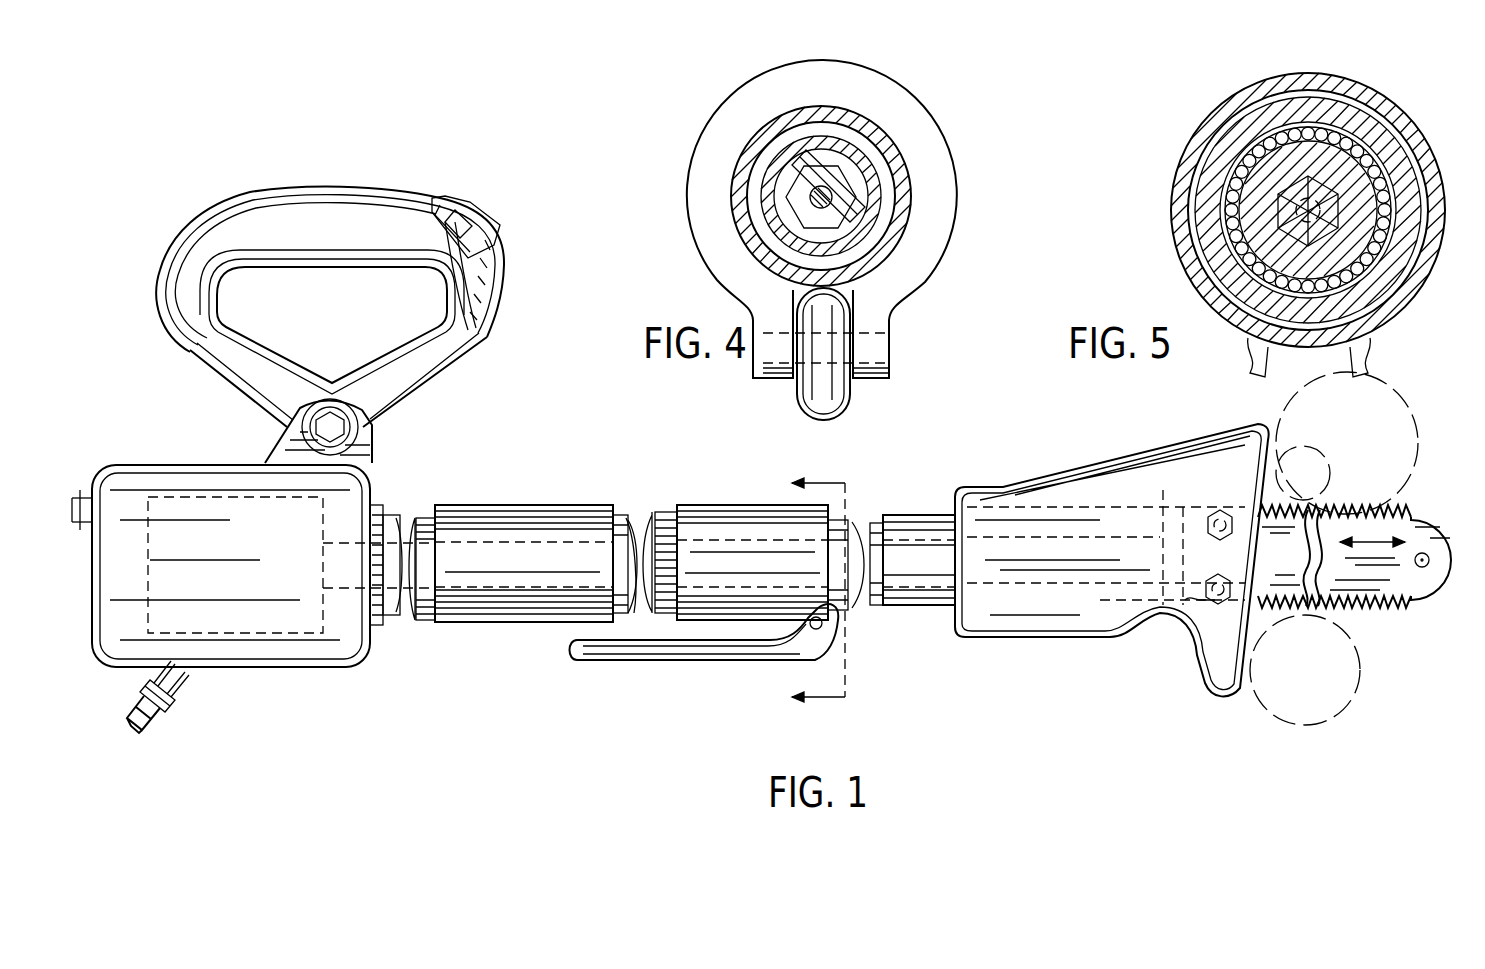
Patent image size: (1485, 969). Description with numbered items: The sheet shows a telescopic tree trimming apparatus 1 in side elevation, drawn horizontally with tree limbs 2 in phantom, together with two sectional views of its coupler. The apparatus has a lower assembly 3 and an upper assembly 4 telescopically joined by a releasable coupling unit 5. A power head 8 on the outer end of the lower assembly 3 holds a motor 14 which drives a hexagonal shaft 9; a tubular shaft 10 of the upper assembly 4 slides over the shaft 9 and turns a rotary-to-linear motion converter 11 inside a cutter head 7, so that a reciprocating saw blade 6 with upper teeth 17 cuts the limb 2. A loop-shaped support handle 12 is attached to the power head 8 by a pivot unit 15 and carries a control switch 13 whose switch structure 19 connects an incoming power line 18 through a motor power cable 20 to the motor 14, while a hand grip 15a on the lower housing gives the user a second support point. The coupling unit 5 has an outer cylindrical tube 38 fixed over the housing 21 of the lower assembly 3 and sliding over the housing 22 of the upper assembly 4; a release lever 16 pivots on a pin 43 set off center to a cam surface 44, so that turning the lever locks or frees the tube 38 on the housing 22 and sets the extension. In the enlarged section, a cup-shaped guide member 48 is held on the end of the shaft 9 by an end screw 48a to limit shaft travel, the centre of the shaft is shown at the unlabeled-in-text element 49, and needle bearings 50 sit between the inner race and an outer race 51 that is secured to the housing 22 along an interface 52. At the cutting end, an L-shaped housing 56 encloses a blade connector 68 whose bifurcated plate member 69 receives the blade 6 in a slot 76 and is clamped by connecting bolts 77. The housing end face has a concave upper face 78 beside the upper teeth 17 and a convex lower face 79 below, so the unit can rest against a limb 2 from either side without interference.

In FIG. 1, the telescopic tree trimming apparatus 1 is at (963, 463).
In FIG. 1, the tree limb 2 is at (1410, 410).
In FIG. 1, the lower assembly 3 is at (658, 510).
In FIG. 5, the lower assembly 3 is at (1203, 173).
In FIG. 1, the upper assembly 4 is at (905, 490).
In FIG. 4, the upper assembly 4 is at (840, 113).
In FIG. 1, the releasable coupling unit 5 is at (770, 531).
In FIG. 4, the releasable coupling unit 5 is at (932, 108).
In FIG. 5, the releasable coupling unit 5 is at (1185, 133).
In FIG. 1, the reciprocating saw blade 6 is at (1388, 606).
In FIG. 1, the cutter head 7 is at (1128, 630).
In FIG. 1, the power head 8 is at (345, 662).
In FIG. 1, the shaft 9 is at (508, 628).
In FIG. 4, the shaft 9 is at (858, 178).
In FIG. 5, the shaft 9 is at (1330, 187).
In FIG. 1, the tubular shaft 10 is at (940, 606).
In FIG. 4, the tubular shaft 10 is at (867, 160).
In FIG. 5, the tubular shaft 10 is at (1405, 135).
In FIG. 1, the rotary to linear motion converter 11 is at (1175, 640).
In FIG. 1, the support handle 12 is at (425, 375).
In FIG. 1, the control switch 13 is at (505, 235).
In FIG. 1, the motor 14 is at (185, 500).
In FIG. 1, the pivot unit 15 is at (357, 433).
In FIG. 1, the hand grip 15a is at (480, 543).
In FIG. 1, the release lever 16 is at (573, 658).
In FIG. 1, the upper teeth 17 is at (1405, 505).
In FIG. 1, the incoming power line 18 is at (150, 724).
In FIG. 1, the switch structure 19 is at (462, 205).
In FIG. 1, the motor power cable 20 is at (80, 480).
In FIG. 1, the housing 21 is at (630, 520).
In FIG. 1, the housing 22 is at (874, 605).
In FIG. 1, the outer cylindrical tube 38 is at (805, 571).
In FIG. 4, the outer cylindrical tube 38 is at (940, 193).
In FIG. 5, the outer cylindrical tube 38 is at (1223, 107).
In FIG. 1, the pin 43 is at (808, 628).
In FIG. 4, the pin 43 is at (887, 343).
In FIG. 1, the cam surface 44 is at (855, 630).
In FIG. 4, the guide member 48 is at (787, 165).
In FIG. 5, the guide member 48 is at (1400, 105).
In FIG. 4, the end screw 48a is at (817, 207).
In FIG. 5, the end screw 48a is at (1433, 273).
In FIG. 4, the shaft bolt 49 is at (813, 197).
In FIG. 4, the needle bearings 50 is at (807, 238).
In FIG. 5, the needle bearings 50 is at (1223, 232).
In FIG. 5, the outer race 51 is at (1228, 262).
In FIG. 5, the interface 52 is at (1227, 297).
In FIG. 1, the L-shaped housing 56 is at (1060, 615).
In FIG. 1, the blade connector 68 is at (987, 585).
In FIG. 1, the bifurcated plate member 69 is at (1166, 470).
In FIG. 1, the slot 76 is at (1180, 600).
In FIG. 1, the connecting bolts 77 is at (1225, 508).
In FIG. 1, the concave upper face 78 is at (1266, 428).
In FIG. 1, the convex lower face 79 is at (1222, 700).